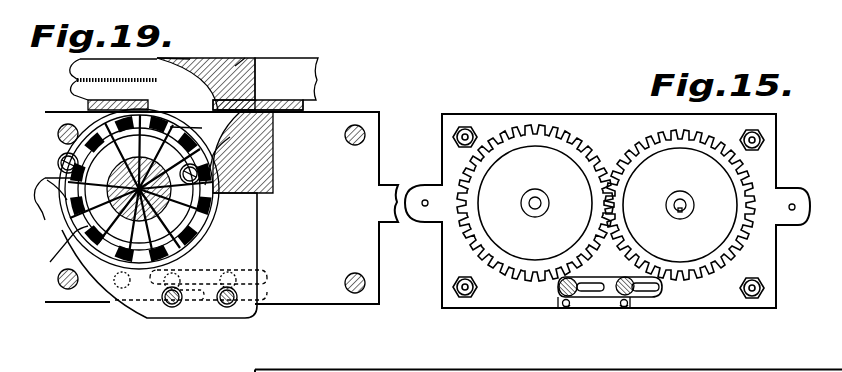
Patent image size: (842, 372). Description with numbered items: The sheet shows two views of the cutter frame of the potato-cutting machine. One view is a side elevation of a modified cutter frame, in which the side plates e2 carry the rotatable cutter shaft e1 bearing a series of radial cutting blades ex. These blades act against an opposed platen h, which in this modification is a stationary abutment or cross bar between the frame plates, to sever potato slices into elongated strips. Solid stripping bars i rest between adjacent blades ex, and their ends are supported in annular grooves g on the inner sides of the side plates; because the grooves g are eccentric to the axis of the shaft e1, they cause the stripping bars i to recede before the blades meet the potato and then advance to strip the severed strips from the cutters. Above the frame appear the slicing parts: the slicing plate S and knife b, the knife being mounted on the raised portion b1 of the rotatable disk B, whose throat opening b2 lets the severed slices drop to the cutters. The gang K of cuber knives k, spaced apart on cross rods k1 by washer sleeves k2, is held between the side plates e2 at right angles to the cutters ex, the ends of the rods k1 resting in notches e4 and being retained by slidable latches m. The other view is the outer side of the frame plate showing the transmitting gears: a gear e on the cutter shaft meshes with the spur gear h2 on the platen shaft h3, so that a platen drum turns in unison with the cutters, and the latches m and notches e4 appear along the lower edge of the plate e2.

In FIG. 19, the gang of cuber knives K is at (203, 344).
In FIG. 19, the cuber knife blade k is at (158, 213).
In FIG. 19, the cross rod k1 is at (160, 302).
In FIG. 19, the washer sleeve k2 is at (230, 302).
In FIG. 19, the slicing plate S is at (74, 73).
In FIG. 19, the rotatable disk B is at (259, 82).
In FIG. 19, the knife b is at (177, 57).
In FIG. 19, the raised portion b1 is at (249, 44).
In FIG. 19, the throat opening b2 is at (173, 82).
In FIG. 19, the latch m is at (208, 7).
In FIG. 15, the latch m is at (637, 312).
In FIG. 19, the platen h is at (253, 142).
In FIG. 19, the side plate e2 is at (308, 163).
In FIG. 15, the side plate e2 is at (607, 211).
In FIG. 19, the cutter shaft e1 is at (139, 189).
In FIG. 19, the radial cutting blade ex is at (200, 153).
In FIG. 19, the stripping bar i is at (114, 186).
In FIG. 19, the annular groove g is at (66, 251).
In FIG. 15, the gear wheel e is at (540, 201).
In FIG. 15, the spur gear h2 is at (680, 205).
In FIG. 15, the platen shaft h3 is at (680, 200).
In FIG. 15, the notch e4 is at (563, 308).